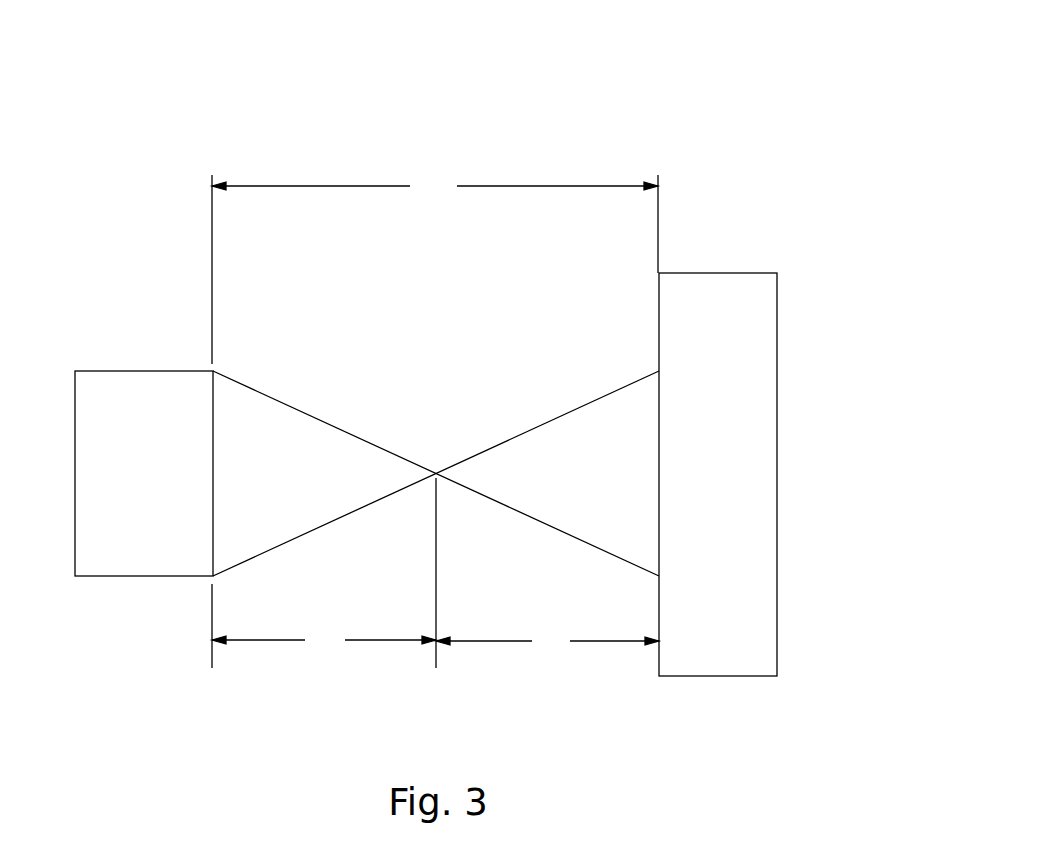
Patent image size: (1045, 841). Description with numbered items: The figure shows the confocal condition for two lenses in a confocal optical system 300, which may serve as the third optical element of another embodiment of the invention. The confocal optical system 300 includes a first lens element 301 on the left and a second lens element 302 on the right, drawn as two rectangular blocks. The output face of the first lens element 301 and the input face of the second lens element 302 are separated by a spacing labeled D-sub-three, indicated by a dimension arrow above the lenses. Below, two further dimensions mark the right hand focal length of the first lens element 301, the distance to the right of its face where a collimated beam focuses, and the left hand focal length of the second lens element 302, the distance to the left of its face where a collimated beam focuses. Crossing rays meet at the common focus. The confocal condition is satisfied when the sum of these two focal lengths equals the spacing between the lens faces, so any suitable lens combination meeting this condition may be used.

The confocal optical system 300 is at (674, 40).
The first lens element 301 is at (138, 371).
The second lens element 302 is at (717, 273).